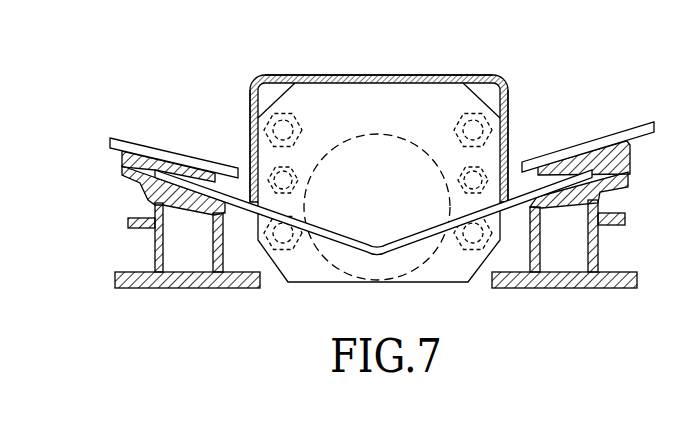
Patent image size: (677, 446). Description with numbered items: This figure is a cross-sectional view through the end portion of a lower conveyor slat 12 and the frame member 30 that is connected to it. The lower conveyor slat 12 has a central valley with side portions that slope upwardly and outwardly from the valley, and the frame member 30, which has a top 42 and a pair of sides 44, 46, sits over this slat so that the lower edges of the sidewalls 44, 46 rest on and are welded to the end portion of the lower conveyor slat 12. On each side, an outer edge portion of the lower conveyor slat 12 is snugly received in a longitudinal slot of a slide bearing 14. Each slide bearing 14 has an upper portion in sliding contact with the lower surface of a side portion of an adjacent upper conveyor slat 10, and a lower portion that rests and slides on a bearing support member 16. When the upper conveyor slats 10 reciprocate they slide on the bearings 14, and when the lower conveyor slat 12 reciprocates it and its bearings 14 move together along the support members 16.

The upper conveyor slat 10 is at (163, 148).
The lower conveyor slat 12 is at (345, 235).
The slide bearing 14 is at (127, 168).
The bearing support member 16 is at (182, 206).
The frame member 30 is at (434, 62).
The top 42 is at (366, 77).
The side 44 is at (250, 140).
The side 46 is at (509, 124).